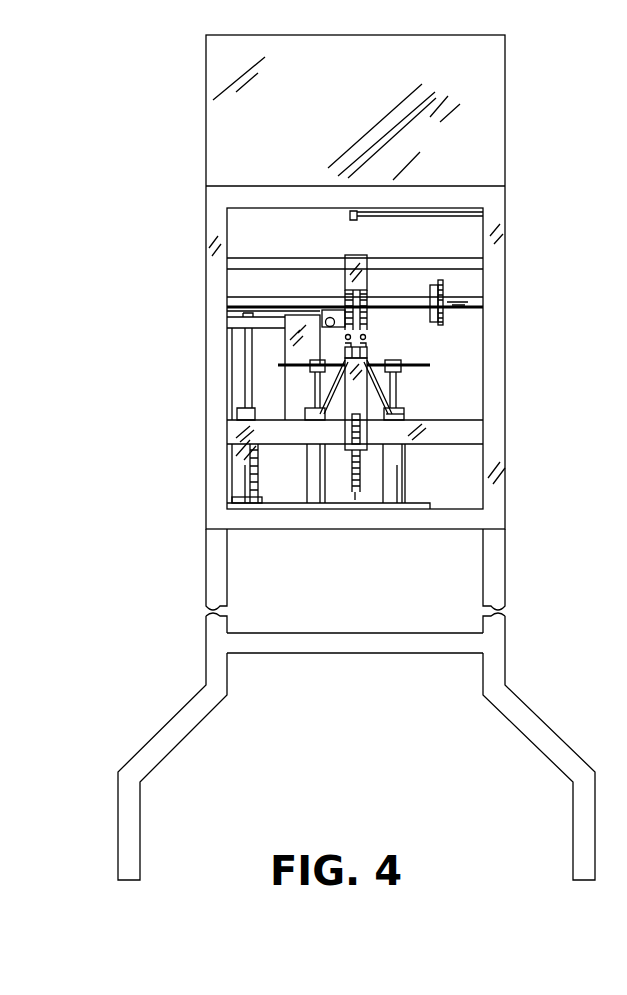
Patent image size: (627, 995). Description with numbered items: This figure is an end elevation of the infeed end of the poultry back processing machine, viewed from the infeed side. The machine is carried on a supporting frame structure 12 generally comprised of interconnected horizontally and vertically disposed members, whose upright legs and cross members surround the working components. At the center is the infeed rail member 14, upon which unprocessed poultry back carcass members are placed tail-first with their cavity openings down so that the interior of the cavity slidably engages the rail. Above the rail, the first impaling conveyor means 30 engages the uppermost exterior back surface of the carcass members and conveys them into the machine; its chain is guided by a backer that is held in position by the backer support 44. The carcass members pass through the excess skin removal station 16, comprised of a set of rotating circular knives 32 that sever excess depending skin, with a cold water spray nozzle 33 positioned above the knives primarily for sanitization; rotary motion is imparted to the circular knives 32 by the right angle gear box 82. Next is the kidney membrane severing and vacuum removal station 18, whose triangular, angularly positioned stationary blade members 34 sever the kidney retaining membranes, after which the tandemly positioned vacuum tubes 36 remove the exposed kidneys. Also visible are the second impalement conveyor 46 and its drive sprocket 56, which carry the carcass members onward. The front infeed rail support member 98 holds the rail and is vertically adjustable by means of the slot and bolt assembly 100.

The supporting frame structure 12 is at (525, 621).
The infeed rail member 14 is at (368, 354).
The excess skin removal station 16 is at (418, 348).
The kidney membrane severing and vacuum removal station 18 is at (405, 401).
The first impaling conveyor means 30 is at (366, 300).
The rotating circular knives 32 is at (297, 362).
The cold water spray nozzle 33 is at (349, 216).
The stationary blade members 34 is at (366, 343).
The vacuum tubes 36 is at (318, 385).
The backer support 44 is at (328, 318).
The second impalement conveyor 46 is at (355, 500).
The second impalement conveyor drive sprocket 56 is at (352, 472).
The right angle gear box 82 is at (258, 478).
The front infeed rail support member 98 is at (345, 427).
The slot and bolt assembly 100 is at (360, 436).